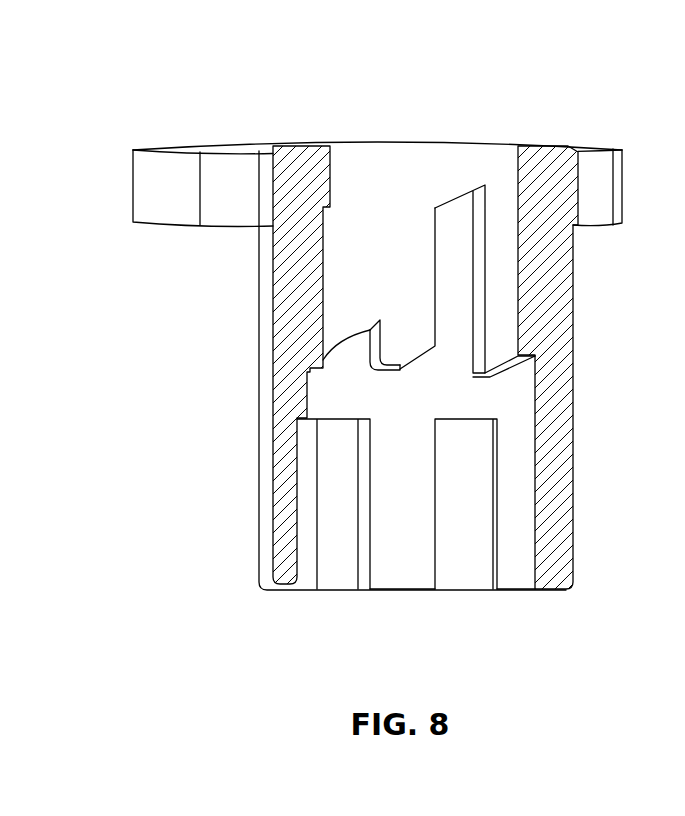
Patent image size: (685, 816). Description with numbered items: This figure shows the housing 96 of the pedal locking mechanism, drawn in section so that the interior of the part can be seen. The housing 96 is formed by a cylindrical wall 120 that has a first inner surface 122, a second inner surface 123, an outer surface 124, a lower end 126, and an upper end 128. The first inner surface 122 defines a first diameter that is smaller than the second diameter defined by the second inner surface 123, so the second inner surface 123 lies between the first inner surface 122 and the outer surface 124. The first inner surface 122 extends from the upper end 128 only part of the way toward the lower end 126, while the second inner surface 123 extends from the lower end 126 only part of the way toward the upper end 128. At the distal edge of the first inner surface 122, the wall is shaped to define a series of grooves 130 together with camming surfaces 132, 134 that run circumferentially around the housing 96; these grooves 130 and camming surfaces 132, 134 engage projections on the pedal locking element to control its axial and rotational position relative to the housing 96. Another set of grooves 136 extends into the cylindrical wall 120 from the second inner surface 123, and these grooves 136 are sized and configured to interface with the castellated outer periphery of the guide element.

The housing 96 is at (597, 98).
The cylindrical wall 120 is at (557, 292).
The first inner surface 122 is at (403, 175).
The second inner surface 123 is at (510, 578).
The outer surface 124 is at (573, 517).
The lower end 126 is at (392, 591).
The upper end 128 is at (303, 141).
The grooves 130 is at (460, 258).
The camming surface 132 is at (402, 366).
The camming surface 134 is at (335, 357).
The grooves 136 is at (345, 528).